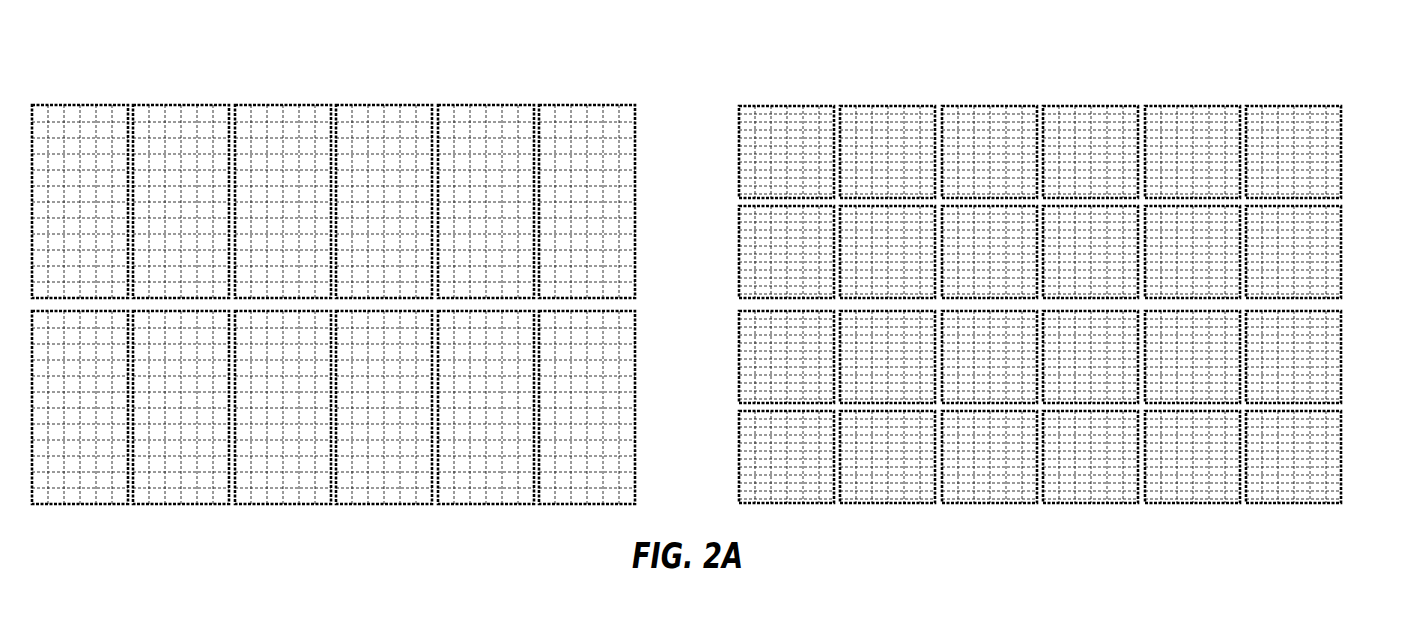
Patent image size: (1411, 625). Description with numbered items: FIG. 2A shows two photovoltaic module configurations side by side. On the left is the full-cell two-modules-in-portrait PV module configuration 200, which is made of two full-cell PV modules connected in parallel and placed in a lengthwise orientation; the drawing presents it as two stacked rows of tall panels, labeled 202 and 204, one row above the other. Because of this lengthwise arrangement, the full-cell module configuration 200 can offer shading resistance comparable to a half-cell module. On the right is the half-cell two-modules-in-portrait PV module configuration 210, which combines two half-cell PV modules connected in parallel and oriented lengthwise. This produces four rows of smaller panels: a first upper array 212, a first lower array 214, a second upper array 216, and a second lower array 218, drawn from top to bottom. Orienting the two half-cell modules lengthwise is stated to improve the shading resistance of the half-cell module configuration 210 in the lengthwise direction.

The full-cell 2MIP PV module configuration 200 is at (364, 266).
The first row of solar panels 202 is at (627, 136).
The second row of solar panels 204 is at (627, 341).
The half-cell 2MIP PV module configuration 210 is at (1071, 265).
The first upper array 212 is at (1333, 136).
The first lower array 214 is at (1333, 236).
The second upper array 216 is at (1333, 341).
The second lower array 218 is at (1333, 441).